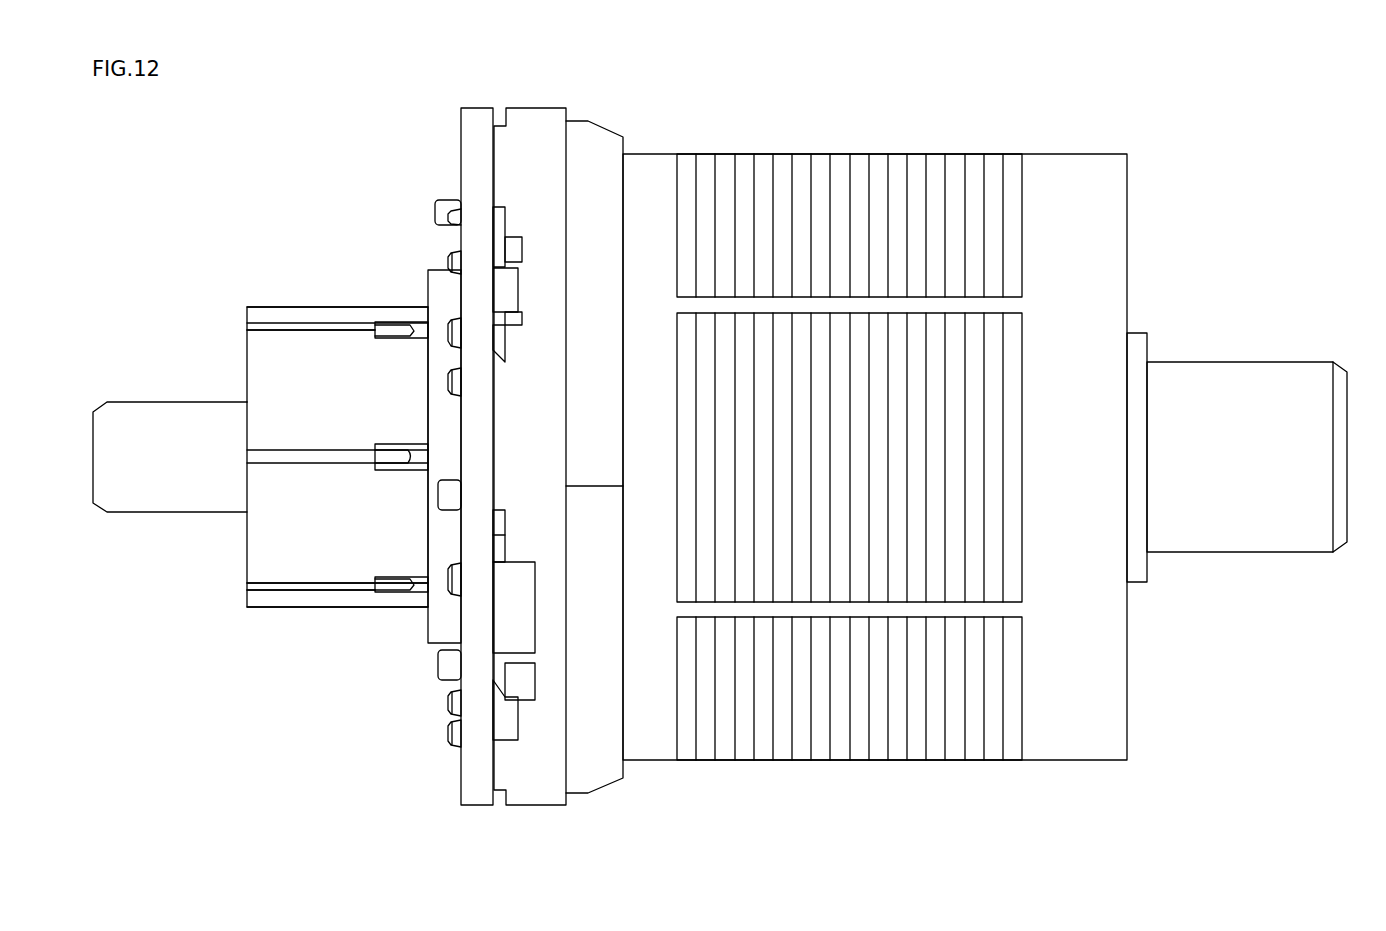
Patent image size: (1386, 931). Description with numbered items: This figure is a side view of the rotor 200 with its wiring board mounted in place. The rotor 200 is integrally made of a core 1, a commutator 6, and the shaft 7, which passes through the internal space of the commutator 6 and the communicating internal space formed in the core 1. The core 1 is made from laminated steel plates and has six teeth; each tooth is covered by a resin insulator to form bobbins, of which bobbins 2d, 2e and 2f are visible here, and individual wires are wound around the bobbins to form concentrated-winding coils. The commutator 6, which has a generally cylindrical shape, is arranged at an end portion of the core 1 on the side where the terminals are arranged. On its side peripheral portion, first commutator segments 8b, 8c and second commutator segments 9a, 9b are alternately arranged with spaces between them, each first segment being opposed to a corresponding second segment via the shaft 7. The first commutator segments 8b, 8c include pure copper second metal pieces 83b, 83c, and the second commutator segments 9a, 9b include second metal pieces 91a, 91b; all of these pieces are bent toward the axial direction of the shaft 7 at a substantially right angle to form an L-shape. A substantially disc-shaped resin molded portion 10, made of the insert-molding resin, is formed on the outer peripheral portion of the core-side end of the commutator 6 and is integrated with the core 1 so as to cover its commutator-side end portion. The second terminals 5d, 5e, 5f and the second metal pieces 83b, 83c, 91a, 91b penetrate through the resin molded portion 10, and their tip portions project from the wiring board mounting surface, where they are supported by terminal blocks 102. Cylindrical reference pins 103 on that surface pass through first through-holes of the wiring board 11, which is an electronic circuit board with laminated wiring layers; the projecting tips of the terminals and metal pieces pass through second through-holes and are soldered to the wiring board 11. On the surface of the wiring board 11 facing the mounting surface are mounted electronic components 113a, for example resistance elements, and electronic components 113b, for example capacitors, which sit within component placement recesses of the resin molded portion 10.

The rotor 200 is at (1122, 118).
The core 1 is at (840, 160).
The bobbin 2d is at (1103, 197).
The bobbin 2e is at (1090, 355).
The bobbin 2f is at (1103, 717).
The shaft 7 is at (1271, 383).
The resin molded portion 10 is at (527, 120).
The wiring board 11 is at (478, 108).
The commutator 6 is at (245, 573).
The first commutator segment 8b is at (262, 305).
The first commutator segment 8c is at (313, 553).
The second commutator segment 9a is at (262, 352).
The second commutator segment 9b is at (270, 600).
The second terminal 5d is at (449, 262).
The second terminal 5e is at (440, 377).
The second terminal 5f is at (448, 728).
The second metal piece 83b is at (452, 218).
The second metal piece 83c is at (448, 578).
The second metal piece 91a is at (450, 322).
The second metal piece 91b is at (448, 700).
The terminal block 102 is at (500, 253).
The reference pin 103 is at (438, 212).
The electronic component 113a is at (505, 296).
The electronic component 113b is at (520, 640).